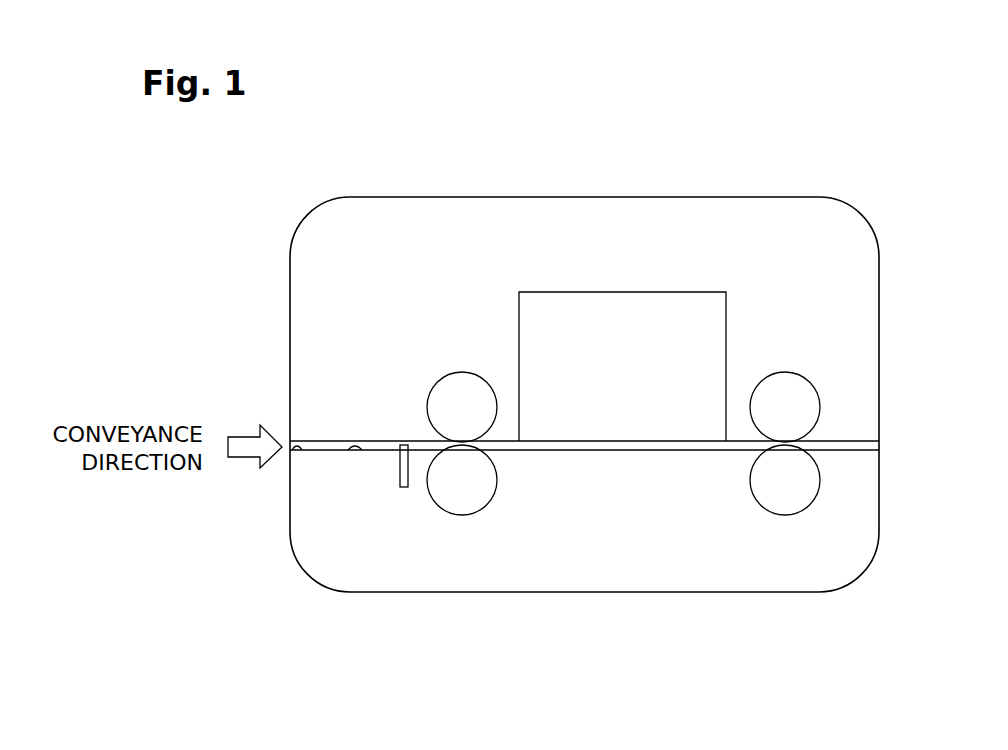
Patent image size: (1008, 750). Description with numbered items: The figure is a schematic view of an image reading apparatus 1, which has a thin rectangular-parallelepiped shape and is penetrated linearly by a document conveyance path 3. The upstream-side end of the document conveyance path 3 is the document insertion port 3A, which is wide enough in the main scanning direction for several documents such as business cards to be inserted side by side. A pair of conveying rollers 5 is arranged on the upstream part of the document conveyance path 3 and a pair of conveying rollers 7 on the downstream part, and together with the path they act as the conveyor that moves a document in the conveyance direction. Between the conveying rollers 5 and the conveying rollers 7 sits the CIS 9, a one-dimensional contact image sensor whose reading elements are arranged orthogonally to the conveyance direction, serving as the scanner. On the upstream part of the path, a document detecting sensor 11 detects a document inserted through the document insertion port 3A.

The image reading apparatus 1 is at (665, 197).
The document conveyance path 3 is at (350, 450).
The document insertion port 3A is at (291, 446).
The pair of conveying rollers 5 is at (452, 425).
The pair of conveying rollers 7 is at (758, 407).
The CIS (contact image sensor) 9 is at (610, 427).
The document detecting sensor 11 is at (403, 487).